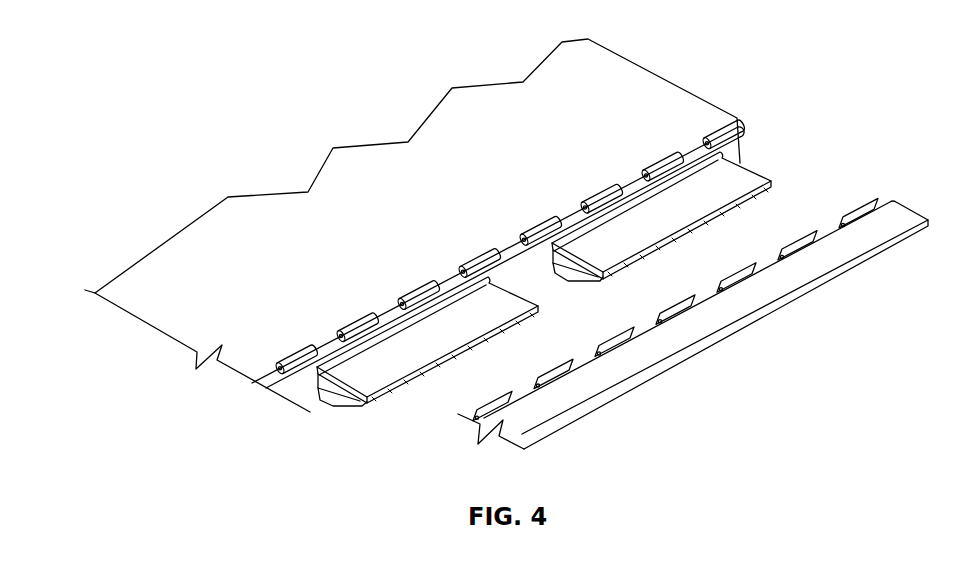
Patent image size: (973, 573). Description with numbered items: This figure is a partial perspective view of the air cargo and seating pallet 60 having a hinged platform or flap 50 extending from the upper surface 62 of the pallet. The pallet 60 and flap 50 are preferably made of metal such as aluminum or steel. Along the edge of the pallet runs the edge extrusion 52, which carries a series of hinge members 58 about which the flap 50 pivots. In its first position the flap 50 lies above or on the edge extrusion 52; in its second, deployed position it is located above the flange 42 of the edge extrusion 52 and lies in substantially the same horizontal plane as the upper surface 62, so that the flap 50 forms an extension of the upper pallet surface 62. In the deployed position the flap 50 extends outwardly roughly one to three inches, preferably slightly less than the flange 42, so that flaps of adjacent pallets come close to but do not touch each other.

The air cargo and seating pallet 60 is at (224, 108).
The upper surface 62 is at (660, 90).
The edge extrusion 52 is at (277, 386).
The hinge members 58 is at (300, 366).
The flange 42 is at (745, 176).
The hinged platform or flap 50 is at (903, 214).